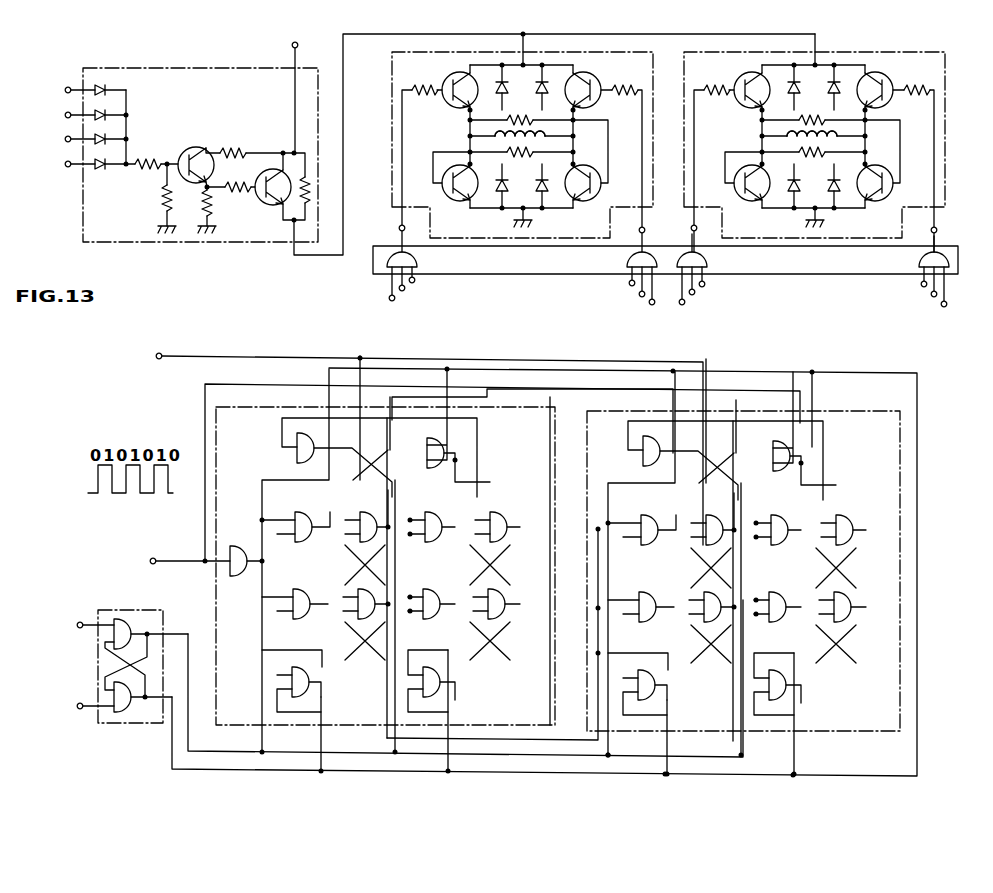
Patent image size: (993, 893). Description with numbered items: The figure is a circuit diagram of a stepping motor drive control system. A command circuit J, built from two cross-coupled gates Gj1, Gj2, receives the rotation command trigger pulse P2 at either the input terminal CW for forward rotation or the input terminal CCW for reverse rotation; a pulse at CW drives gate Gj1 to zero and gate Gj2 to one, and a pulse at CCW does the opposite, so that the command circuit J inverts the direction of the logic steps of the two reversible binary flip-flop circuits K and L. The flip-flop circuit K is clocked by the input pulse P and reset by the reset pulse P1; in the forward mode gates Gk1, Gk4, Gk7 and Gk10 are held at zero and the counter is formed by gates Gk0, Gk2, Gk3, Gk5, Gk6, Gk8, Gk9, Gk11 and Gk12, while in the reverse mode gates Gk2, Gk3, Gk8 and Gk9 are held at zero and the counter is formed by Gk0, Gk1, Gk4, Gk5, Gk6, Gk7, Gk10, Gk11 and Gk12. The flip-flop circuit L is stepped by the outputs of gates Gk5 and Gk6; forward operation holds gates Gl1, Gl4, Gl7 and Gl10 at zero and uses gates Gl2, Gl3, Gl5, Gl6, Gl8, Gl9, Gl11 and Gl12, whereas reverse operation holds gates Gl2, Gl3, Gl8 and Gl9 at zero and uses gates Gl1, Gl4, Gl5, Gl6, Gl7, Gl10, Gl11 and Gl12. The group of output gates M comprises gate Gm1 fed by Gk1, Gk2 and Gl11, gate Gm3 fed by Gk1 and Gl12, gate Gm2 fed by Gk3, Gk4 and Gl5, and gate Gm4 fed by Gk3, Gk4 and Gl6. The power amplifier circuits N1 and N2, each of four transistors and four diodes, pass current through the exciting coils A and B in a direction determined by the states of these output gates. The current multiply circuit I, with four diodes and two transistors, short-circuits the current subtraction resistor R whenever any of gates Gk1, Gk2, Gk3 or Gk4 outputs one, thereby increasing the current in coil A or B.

The current multiply circuit I is at (182, 243).
The resistor R is at (308, 186).
The power amplifier circuit N1 is at (392, 133).
The power amplifier circuit N2 is at (945, 138).
The exciting coil A is at (495, 136).
The exciting coil B is at (787, 136).
The group of output gates M is at (817, 276).
The gate Gm1 is at (417, 260).
The gate Gm2 is at (707, 260).
The gate Gm3 is at (627, 262).
The gate Gm4 is at (919, 262).
The command circuit J is at (147, 726).
The gate Gj1 is at (118, 617).
The gate Gj2 is at (118, 713).
The reversible binary flip-flop circuit K is at (214, 600).
The reversible binary flip-flop circuit L is at (903, 537).
The input pulse P is at (161, 552).
The reset pulse P1 is at (166, 368).
The rotation command trigger pulse P2 is at (75, 653).
The input terminal CW is at (81, 640).
The input terminal CCW is at (73, 707).
The gate Gk0 is at (235, 546).
The gate Gk1 is at (297, 455).
The gate Gk2 is at (297, 547).
The gate Gk3 is at (306, 618).
The gate Gk4 is at (297, 676).
The gate Gk5 is at (358, 542).
The gate Gk6 is at (358, 598).
The gate Gk7 is at (430, 441).
The gate Gk8 is at (433, 545).
The gate Gk9 is at (438, 618).
The gate Gk10 is at (422, 695).
The gate Gk11 is at (505, 506).
The gate Gk12 is at (497, 620).
The gate Gl1 is at (643, 458).
The gate Gl2 is at (643, 548).
The gate Gl3 is at (652, 622).
The gate Gl4 is at (643, 679).
The gate Gl5 is at (704, 545).
The gate Gl6 is at (704, 601).
The gate Gl7 is at (776, 449).
The gate Gl8 is at (779, 548).
The gate Gl9 is at (784, 622).
The gate Gl10 is at (768, 698).
The gate Gl11 is at (845, 515).
The gate Gl12 is at (843, 623).